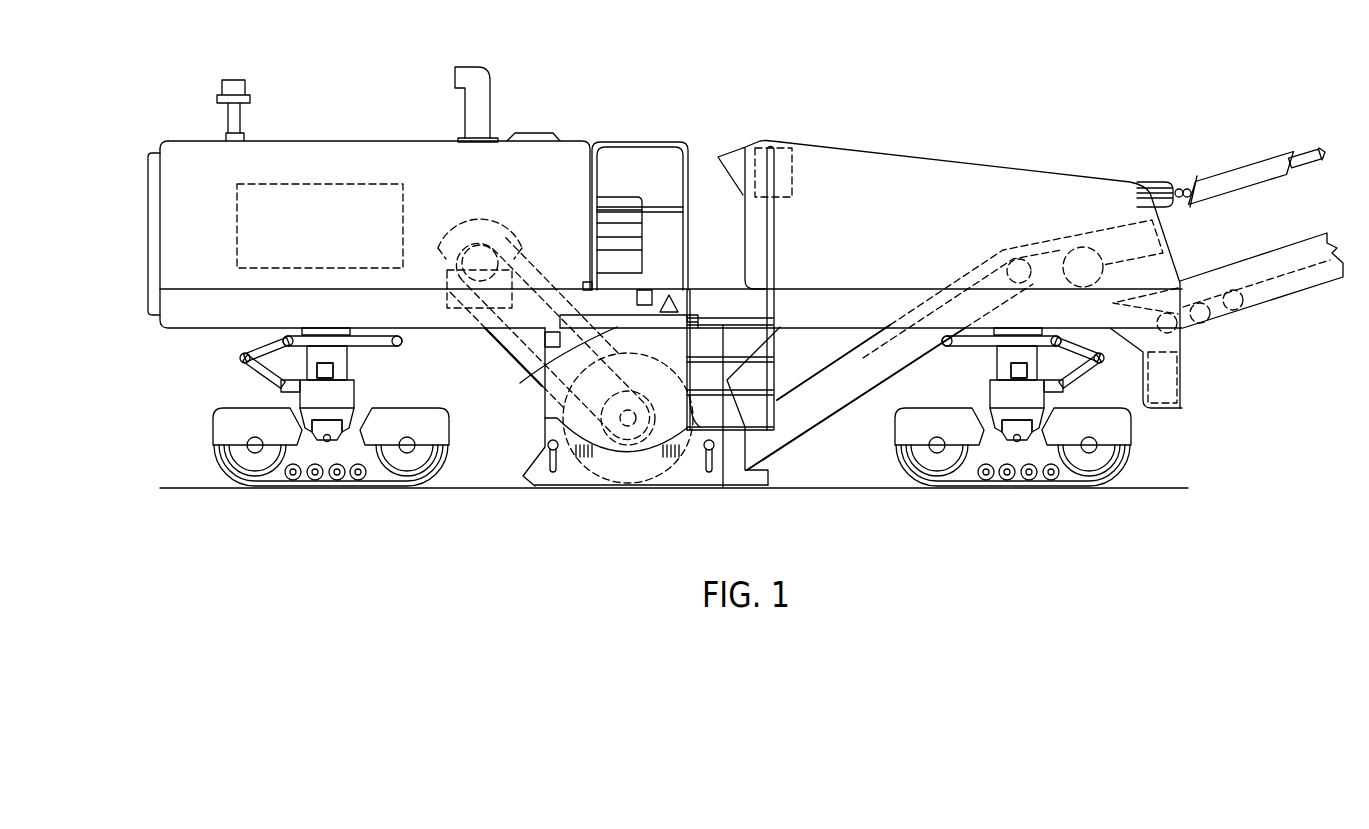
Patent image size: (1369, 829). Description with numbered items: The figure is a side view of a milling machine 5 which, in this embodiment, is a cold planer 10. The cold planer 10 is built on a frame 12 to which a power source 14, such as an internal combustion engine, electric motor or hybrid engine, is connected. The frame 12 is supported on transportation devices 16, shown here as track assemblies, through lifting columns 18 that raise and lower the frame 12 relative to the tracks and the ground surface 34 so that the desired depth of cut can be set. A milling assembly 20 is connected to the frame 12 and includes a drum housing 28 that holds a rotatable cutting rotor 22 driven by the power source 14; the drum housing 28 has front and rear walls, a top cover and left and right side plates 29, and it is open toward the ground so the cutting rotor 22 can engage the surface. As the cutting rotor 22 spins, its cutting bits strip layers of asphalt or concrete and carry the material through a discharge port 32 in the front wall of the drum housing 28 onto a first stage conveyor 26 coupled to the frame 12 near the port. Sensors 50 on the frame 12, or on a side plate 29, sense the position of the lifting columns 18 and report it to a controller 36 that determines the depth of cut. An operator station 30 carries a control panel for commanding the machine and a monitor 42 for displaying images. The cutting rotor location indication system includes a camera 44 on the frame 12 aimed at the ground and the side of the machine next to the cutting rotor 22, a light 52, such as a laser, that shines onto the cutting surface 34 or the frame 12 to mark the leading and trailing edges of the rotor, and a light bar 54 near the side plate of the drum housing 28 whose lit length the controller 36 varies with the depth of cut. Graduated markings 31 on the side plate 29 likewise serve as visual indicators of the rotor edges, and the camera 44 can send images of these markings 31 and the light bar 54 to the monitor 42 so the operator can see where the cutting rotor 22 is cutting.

The milling machine 5 is at (1112, 86).
The cold planer 10 is at (1218, 86).
The frame 12 is at (170, 330).
The power source 14 is at (320, 183).
The transportation devices 16 is at (223, 462).
The lifting columns 18 is at (347, 360).
The milling assembly 20 is at (532, 446).
The cutting rotor 22 is at (593, 477).
The first stage conveyor 26 is at (822, 420).
The drum housing 28 is at (637, 337).
The side plate 29 is at (550, 432).
The operator station 30 is at (707, 155).
The graduated markings 31 is at (663, 457).
The discharge port 32 is at (777, 437).
The ground surface 34 is at (830, 487).
The controller 36 is at (784, 158).
The monitor 42 is at (728, 148).
The camera 44 is at (680, 304).
The sensor 50 is at (327, 373).
The light 52 is at (644, 292).
The light bar 54 is at (543, 385).